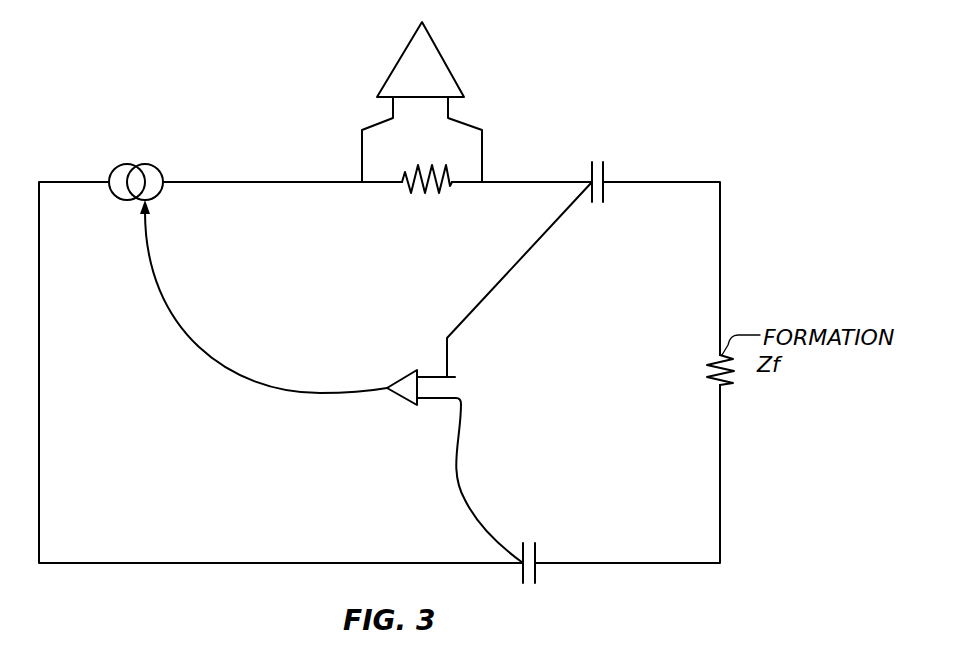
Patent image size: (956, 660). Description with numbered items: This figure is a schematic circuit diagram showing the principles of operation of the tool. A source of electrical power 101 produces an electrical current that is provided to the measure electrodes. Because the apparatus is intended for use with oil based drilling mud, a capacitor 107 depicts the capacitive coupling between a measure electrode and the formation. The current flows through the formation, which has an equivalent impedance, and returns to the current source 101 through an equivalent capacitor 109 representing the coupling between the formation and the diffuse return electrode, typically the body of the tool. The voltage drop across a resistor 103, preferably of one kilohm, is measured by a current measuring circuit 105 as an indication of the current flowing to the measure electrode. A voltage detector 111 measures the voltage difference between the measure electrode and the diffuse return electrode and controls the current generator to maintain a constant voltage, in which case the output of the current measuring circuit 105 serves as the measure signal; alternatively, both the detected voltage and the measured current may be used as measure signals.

The source of electrical power 101 is at (141, 165).
The resistor 103 is at (424, 195).
The current measuring circuit 105 is at (445, 61).
The capacitor 107 is at (605, 170).
The equivalent capacitor 109 is at (537, 553).
The voltage detector 111 is at (405, 372).